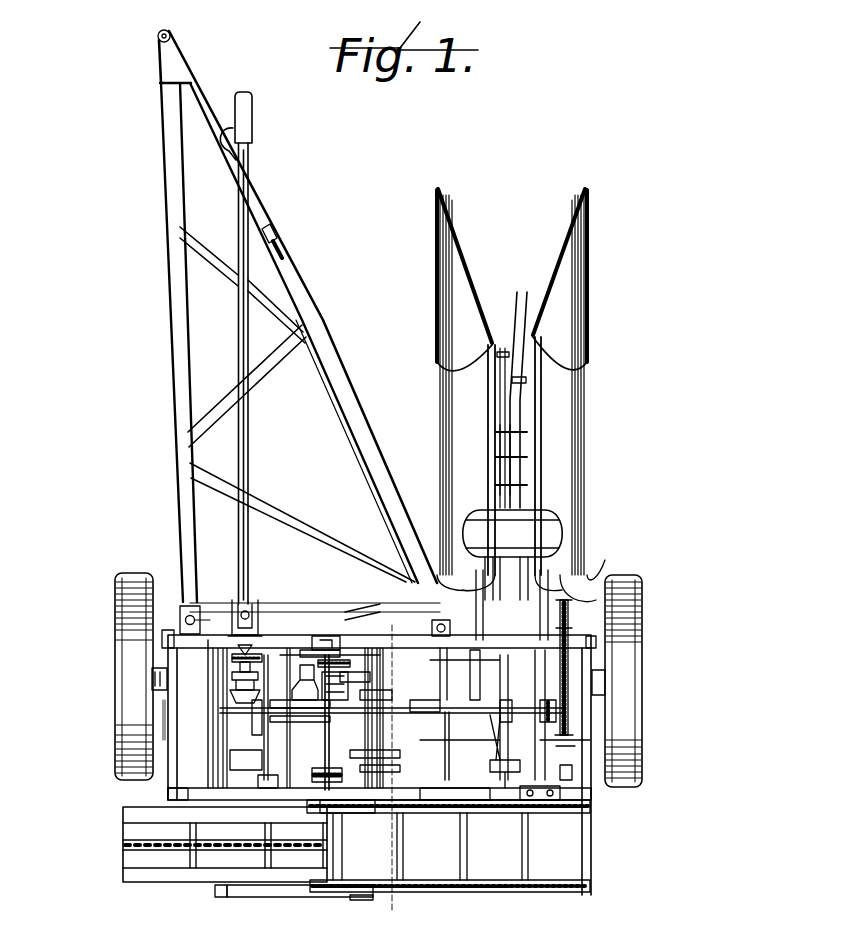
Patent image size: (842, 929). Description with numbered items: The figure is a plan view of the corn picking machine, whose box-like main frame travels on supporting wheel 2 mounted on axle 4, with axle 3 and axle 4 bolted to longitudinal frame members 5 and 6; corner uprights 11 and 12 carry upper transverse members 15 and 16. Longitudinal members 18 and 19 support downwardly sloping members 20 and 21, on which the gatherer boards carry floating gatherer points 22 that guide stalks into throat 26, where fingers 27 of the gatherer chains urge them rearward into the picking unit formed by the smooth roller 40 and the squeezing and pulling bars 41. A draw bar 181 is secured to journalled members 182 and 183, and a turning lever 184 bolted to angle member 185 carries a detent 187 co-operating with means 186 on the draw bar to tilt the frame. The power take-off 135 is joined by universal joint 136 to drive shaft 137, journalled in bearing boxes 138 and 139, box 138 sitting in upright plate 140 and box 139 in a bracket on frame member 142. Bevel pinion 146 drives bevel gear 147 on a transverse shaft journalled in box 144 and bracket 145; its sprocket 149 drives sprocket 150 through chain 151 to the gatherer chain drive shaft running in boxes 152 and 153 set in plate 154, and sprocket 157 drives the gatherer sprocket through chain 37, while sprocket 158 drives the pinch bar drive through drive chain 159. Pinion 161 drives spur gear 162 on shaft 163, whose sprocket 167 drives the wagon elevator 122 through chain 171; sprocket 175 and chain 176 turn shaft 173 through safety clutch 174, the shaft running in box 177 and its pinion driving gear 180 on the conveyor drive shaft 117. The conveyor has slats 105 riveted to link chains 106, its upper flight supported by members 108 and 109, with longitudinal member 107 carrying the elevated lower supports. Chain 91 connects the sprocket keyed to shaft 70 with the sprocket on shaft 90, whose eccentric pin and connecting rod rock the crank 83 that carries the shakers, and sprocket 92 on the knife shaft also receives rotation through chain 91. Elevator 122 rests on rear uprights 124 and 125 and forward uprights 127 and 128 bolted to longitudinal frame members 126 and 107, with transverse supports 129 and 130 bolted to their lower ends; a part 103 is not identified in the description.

The draw bar 181 is at (152, 187).
The journalled member 182 is at (212, 612).
The power take-off 135 is at (250, 413).
The universal joint 136 is at (255, 598).
The bearing box 138 is at (258, 612).
The upright plate 140 is at (262, 636).
The detent 187 is at (276, 234).
The detent co-operating means 186 is at (284, 247).
The turning lever 184 is at (310, 298).
The gatherer points 22 is at (436, 193).
The throat 26 is at (515, 320).
The fingers 27 is at (500, 350).
The squeezing and pulling bars 41 is at (508, 438).
The roller 40 is at (520, 462).
The chain 37 is at (513, 533).
The sprocket 157 is at (536, 556).
The bearing box 153 is at (490, 556).
The sloping longitudinal member 21 is at (478, 575).
The conveyor support member 108 is at (550, 585).
The sloping longitudinal member 20 is at (588, 590).
The sprocket 150 is at (570, 615).
The longitudinal member 19 is at (600, 658).
The corner upright 12 is at (596, 640).
The upper transverse member 16 is at (388, 620).
The bearing box 177 is at (362, 612).
The spur gear 162 is at (318, 640).
The longitudinal frame member 6 is at (388, 626).
The corner upright 11 is at (165, 632).
The supporting wheel 2 is at (125, 653).
The axle 4 is at (150, 690).
The longitudinal frame member 5 is at (170, 720).
The upper transverse member 15 is at (170, 793).
The axle 3 is at (605, 693).
The bearing box 152 is at (575, 598).
The chain 151 is at (572, 628).
The sprocket 149 is at (565, 735).
The bracket 145 is at (560, 746).
The chain 91 is at (575, 770).
The shaft 90 is at (580, 794).
The pinion 161 is at (230, 658).
The drive shaft 137 is at (238, 673).
The bearing box 139 is at (236, 686).
The bevel pinion 146 is at (236, 694).
The bevel gear 147 is at (250, 716).
The frame member 142 is at (268, 733).
The sprocket 167 is at (268, 762).
The longitudinal frame member 126 is at (222, 778).
The forward upright 127 is at (268, 776).
The sprocket 175 is at (320, 676).
The bearing box 144 is at (304, 685).
The shaft 173 is at (330, 715).
The shaft 163 is at (282, 726).
The transverse support 130 is at (303, 758).
The horizontal shaft 103 is at (349, 716).
The chain 171 is at (308, 788).
The chain 176 is at (340, 658).
The safety clutch 174 is at (350, 677).
The longitudinal member 107 is at (368, 694).
The angle member 185 is at (452, 680).
The journalled member 183 is at (420, 700).
The plate 154 is at (478, 680).
The longitudinal member 18 is at (500, 698).
The sprocket 158 is at (392, 728).
The forward upright 128 is at (360, 758).
The gear 180 is at (370, 768).
The conveyor support member 109 is at (406, 796).
The shaft 70 is at (448, 733).
The crank 83 is at (510, 730).
The sprocket 92 is at (490, 760).
The wagon elevator 122 is at (143, 882).
The rear upright 124 is at (218, 895).
The transverse support 129 is at (279, 897).
The rear upright 125 is at (357, 900).
The conveyor drive shaft 117 is at (342, 828).
The drive chain 159 is at (432, 812).
The link chains 106 is at (498, 806).
The slats 105 is at (528, 851).